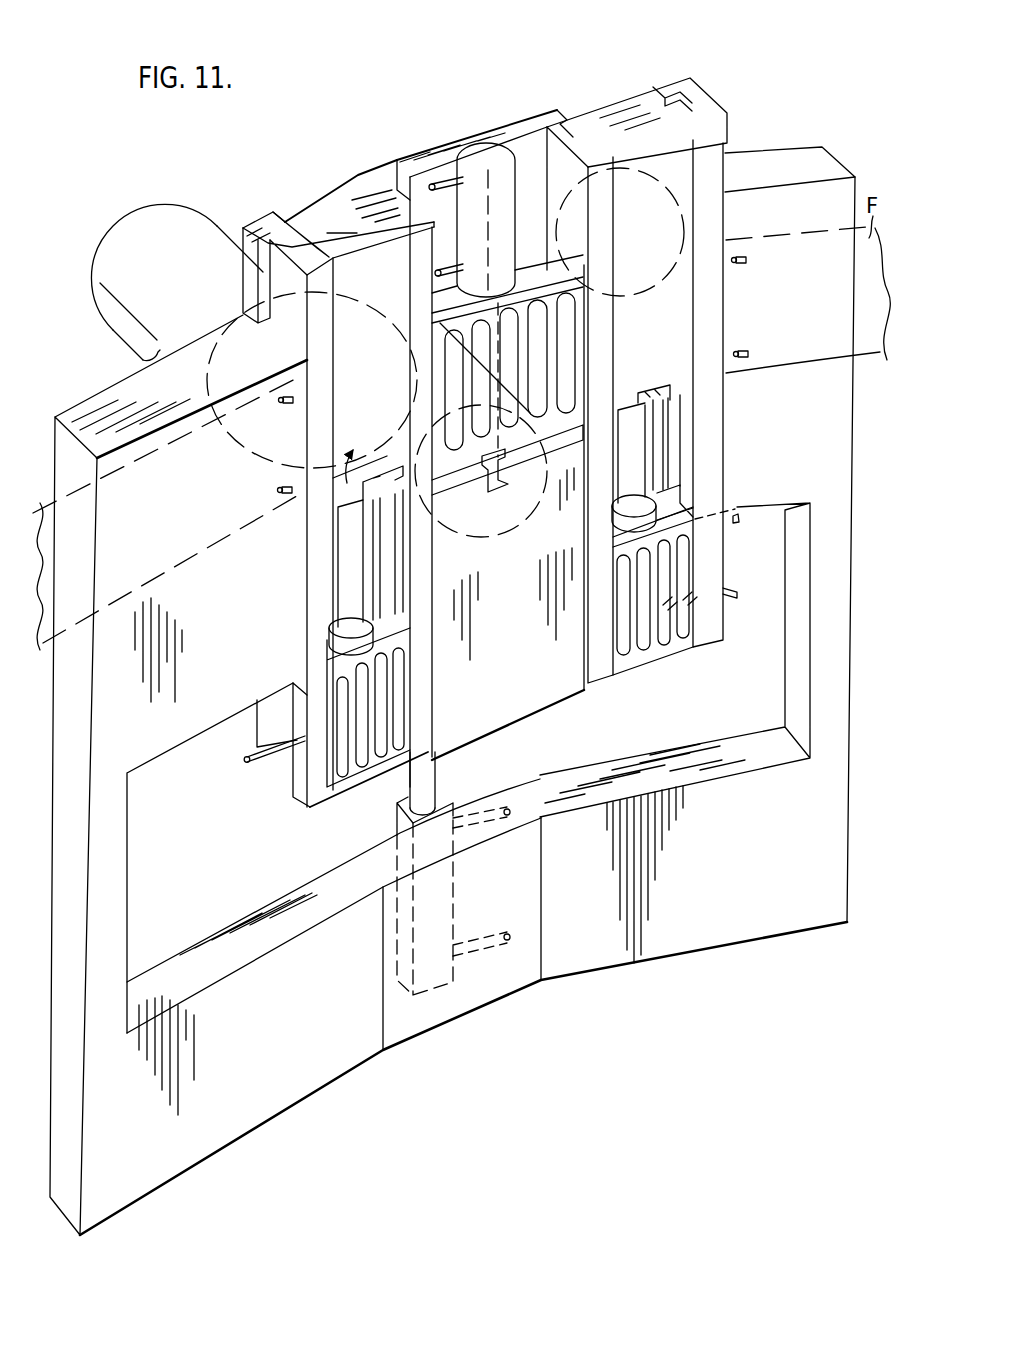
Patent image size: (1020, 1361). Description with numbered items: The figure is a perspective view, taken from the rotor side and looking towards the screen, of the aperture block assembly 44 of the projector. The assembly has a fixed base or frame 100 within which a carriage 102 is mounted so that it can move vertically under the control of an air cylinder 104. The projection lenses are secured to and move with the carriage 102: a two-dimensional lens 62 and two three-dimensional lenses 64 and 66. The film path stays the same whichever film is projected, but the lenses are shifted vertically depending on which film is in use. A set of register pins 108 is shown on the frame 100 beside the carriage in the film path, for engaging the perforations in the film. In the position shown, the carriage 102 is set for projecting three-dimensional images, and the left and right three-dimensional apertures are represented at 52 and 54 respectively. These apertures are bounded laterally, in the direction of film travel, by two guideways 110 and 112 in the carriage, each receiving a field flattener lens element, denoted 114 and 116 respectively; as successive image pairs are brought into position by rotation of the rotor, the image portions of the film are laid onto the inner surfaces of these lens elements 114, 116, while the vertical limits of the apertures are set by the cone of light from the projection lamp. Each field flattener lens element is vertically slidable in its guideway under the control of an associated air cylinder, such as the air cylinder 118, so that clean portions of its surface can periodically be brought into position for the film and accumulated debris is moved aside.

The aperture block assembly 44 is at (858, 150).
The left 3-D aperture 52 is at (388, 458).
The right 3-D aperture 54 is at (668, 338).
The 2-D projection lens 62 is at (500, 549).
The 3-D projection lens 64 is at (130, 247).
The 3-D projection lens 66 is at (478, 128).
The frame 100 is at (267, 1085).
The carriage 102 is at (652, 475).
The air cylinder 104 is at (432, 1002).
The register pins 108 is at (280, 492).
The guideway 110 is at (338, 455).
The guideway 112 is at (572, 107).
The field flattener lens element 114 is at (338, 217).
The field flattener lens element 116 is at (677, 123).
The air cylinder 118 is at (330, 612).